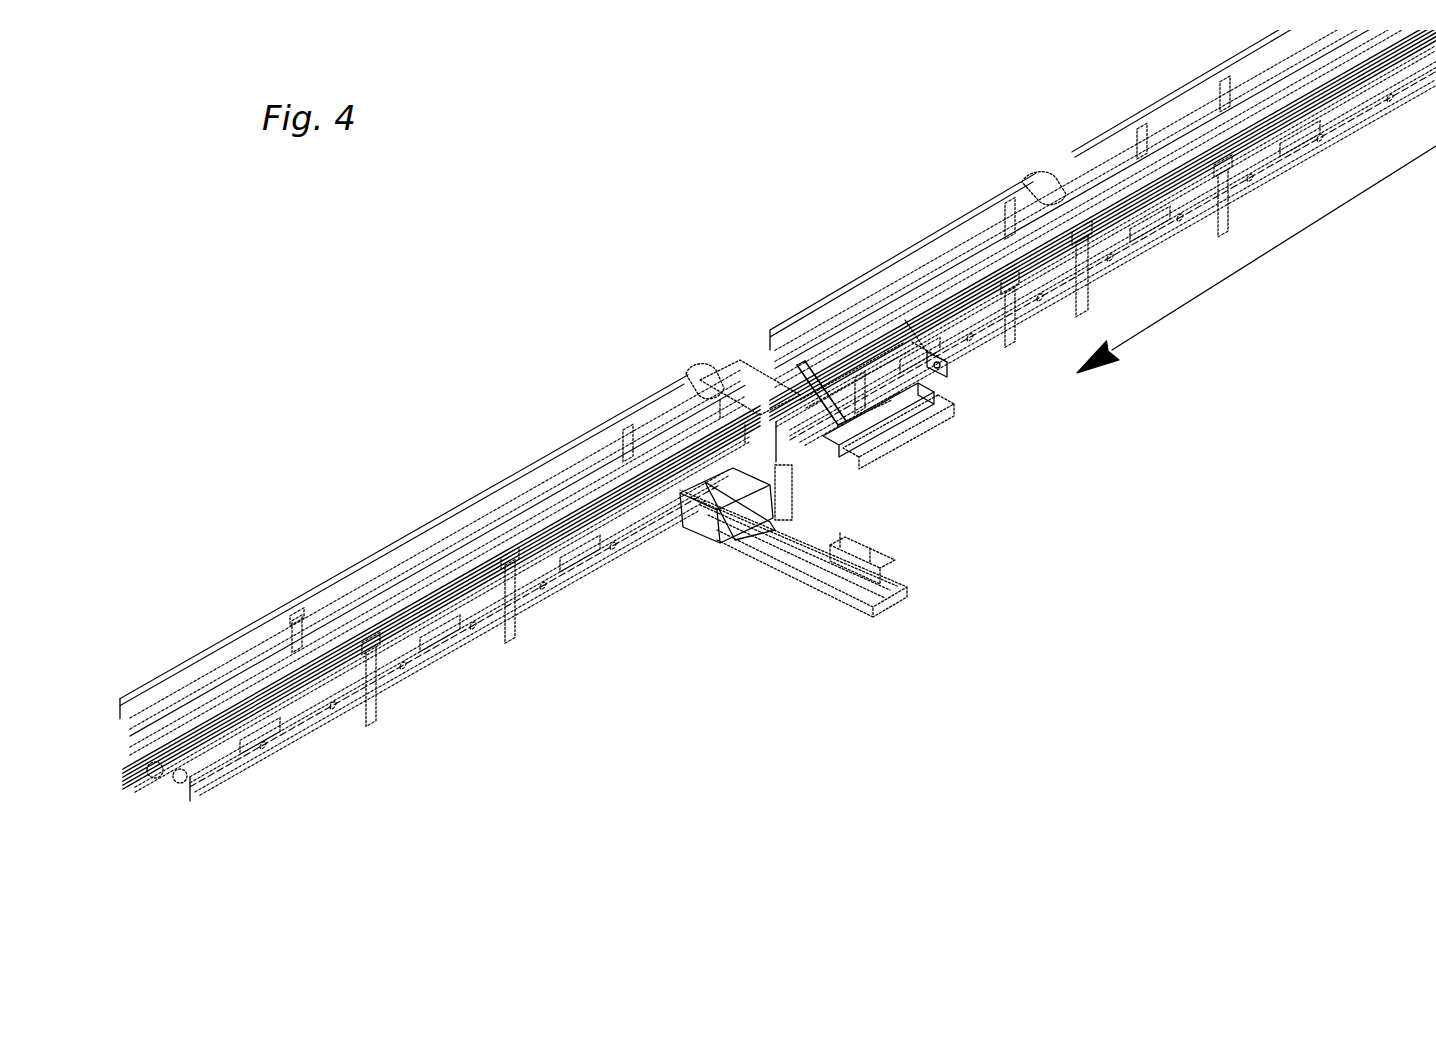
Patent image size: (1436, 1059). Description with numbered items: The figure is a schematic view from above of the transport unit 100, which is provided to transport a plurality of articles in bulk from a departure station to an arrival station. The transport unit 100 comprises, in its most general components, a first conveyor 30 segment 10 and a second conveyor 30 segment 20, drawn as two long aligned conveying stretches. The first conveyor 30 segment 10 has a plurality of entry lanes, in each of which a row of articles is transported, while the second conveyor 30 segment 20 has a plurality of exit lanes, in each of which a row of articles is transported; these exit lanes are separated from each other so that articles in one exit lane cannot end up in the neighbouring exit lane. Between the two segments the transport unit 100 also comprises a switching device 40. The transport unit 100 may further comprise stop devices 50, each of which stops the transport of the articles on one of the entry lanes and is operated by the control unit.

The transport unit 100 is at (766, 157).
The first conveyor segment 10 is at (1108, 185).
The second conveyor segment 20 is at (410, 585).
The conveyor 30 is at (660, 543).
The switching device 40 is at (828, 515).
The stop device 50 is at (947, 368).